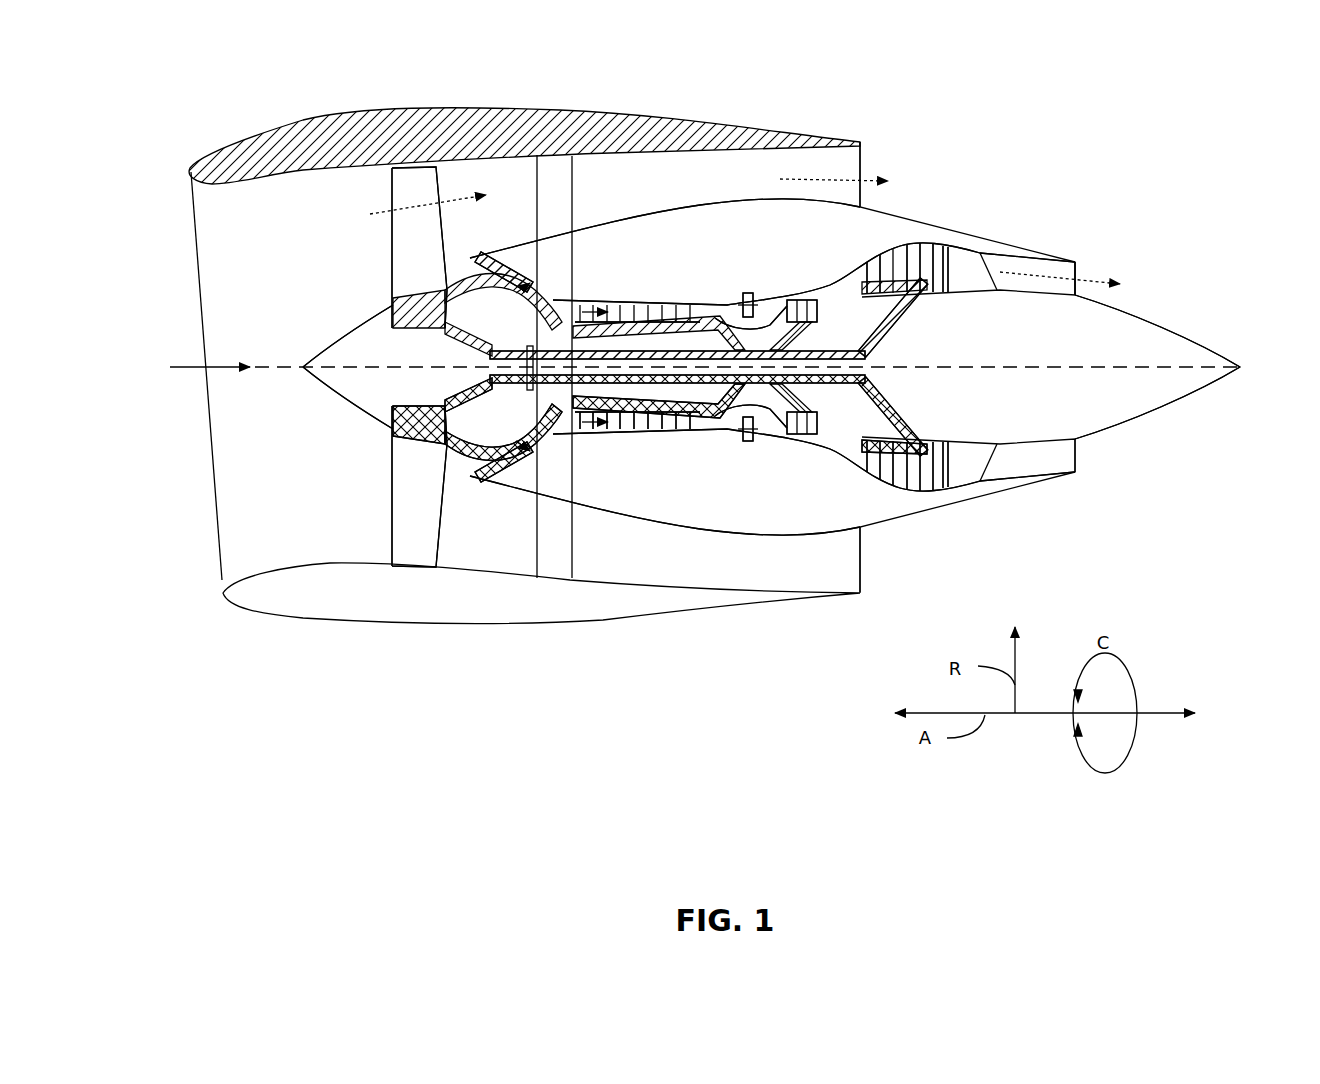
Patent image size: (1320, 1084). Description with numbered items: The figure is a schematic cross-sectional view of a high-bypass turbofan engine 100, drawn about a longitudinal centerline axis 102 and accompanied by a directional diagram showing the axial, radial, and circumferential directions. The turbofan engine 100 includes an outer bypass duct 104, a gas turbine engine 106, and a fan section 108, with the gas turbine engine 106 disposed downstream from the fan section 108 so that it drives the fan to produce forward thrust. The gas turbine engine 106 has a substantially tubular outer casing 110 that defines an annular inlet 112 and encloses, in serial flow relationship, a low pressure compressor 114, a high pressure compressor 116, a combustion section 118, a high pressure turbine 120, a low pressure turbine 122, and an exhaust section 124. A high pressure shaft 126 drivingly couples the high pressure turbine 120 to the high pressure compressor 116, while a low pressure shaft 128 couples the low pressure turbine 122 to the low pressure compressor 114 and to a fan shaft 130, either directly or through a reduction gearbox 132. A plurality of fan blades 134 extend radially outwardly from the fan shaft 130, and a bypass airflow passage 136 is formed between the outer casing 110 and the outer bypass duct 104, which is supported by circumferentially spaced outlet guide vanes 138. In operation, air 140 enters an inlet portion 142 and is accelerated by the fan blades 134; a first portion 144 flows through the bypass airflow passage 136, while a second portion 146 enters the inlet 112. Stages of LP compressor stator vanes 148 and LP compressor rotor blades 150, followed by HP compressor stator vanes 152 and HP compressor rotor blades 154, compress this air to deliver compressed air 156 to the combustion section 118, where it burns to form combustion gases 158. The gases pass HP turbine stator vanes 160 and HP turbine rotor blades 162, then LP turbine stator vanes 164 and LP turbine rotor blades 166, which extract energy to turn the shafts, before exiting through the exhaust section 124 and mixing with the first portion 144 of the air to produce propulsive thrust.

The turbofan engine 100 is at (993, 112).
The centerline axis 102 is at (1003, 364).
The outer bypass duct 104 is at (443, 107).
The gas turbine engine 106 is at (697, 250).
The fan section 108 is at (314, 232).
The outer casing 110 is at (713, 520).
The annular inlet 112 is at (480, 470).
The low pressure compressor 114 is at (530, 453).
The high pressure compressor 116 is at (607, 437).
The combustion section 118 is at (758, 437).
The high pressure turbine 120 is at (827, 423).
The low pressure turbine 122 is at (942, 490).
The exhaust section 124 is at (1082, 268).
The high pressure shaft 126 is at (817, 353).
The low pressure shaft 128 is at (543, 349).
The fan shaft 130 is at (437, 338).
The reduction gearbox 132 is at (543, 395).
The fan blades 134 is at (391, 497).
The bypass airflow passage 136 is at (705, 189).
The outlet guide vanes 138 is at (771, 121).
The air 140 is at (216, 362).
The inlet portion 142 is at (220, 568).
The first portion of the air 144 is at (408, 203).
The second portion of the air 146 is at (466, 260).
The LP compressor stator vanes 148 is at (500, 478).
The LP compressor rotor blades 150 is at (510, 478).
The HP compressor stator vanes 152 is at (692, 427).
The HP compressor rotor blades 154 is at (702, 428).
The compressed air 156 is at (733, 320).
The combustion gases 158 is at (807, 296).
The HP turbine stator vanes 160 is at (790, 428).
The HP turbine rotor blades 162 is at (803, 423).
The LP turbine stator vanes 164 is at (926, 259).
The LP turbine rotor blades 166 is at (880, 247).